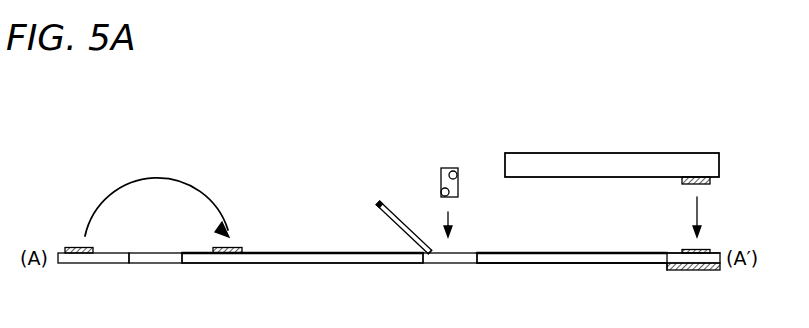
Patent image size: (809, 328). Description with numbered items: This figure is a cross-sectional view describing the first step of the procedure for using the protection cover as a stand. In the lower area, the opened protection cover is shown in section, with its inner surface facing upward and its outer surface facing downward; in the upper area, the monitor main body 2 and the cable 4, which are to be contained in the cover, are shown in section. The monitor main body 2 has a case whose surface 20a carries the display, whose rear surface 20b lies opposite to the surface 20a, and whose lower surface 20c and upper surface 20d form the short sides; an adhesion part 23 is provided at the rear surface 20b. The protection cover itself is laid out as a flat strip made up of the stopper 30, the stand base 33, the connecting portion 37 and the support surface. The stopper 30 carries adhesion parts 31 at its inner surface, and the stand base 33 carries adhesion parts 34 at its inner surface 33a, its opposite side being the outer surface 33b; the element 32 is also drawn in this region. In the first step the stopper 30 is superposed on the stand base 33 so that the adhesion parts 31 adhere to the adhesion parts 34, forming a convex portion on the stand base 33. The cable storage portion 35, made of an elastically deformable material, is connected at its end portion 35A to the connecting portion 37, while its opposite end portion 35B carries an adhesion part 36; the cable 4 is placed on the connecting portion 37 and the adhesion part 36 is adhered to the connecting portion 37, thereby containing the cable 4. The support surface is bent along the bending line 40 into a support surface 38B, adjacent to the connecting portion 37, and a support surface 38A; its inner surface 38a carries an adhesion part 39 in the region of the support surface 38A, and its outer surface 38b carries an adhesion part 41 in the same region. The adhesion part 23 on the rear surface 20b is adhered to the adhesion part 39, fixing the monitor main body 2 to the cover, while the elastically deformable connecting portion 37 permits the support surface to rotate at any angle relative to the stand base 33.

The monitor main body 2 is at (641, 112).
The cable 4 is at (448, 168).
The surface 20a is at (555, 153).
The rear surface 20b is at (561, 178).
The lower surface 20c is at (504, 165).
The upper surface 20d is at (720, 166).
The adhesion part 23 is at (690, 185).
The stopper 30 is at (93, 264).
The adhesion parts 31 is at (75, 247).
The second substrate portion 32 is at (158, 264).
The stand base 33 is at (348, 264).
The inner surface 33a is at (288, 252).
The outer surface 33b is at (284, 264).
The adhesion parts 34 is at (215, 247).
The cable storage portion 35 is at (400, 230).
The end portion 35A is at (428, 251).
The end portion 35B is at (381, 204).
The adhesion part 36 is at (376, 207).
The connecting portion 37 is at (450, 264).
The inner surface 38a is at (530, 252).
The support surface 38A is at (668, 257).
The outer surface 38b is at (600, 264).
The support surface 38B is at (553, 264).
The adhesion part 39 is at (702, 249).
The bending line 40 is at (661, 270).
The adhesion part 41 is at (700, 270).